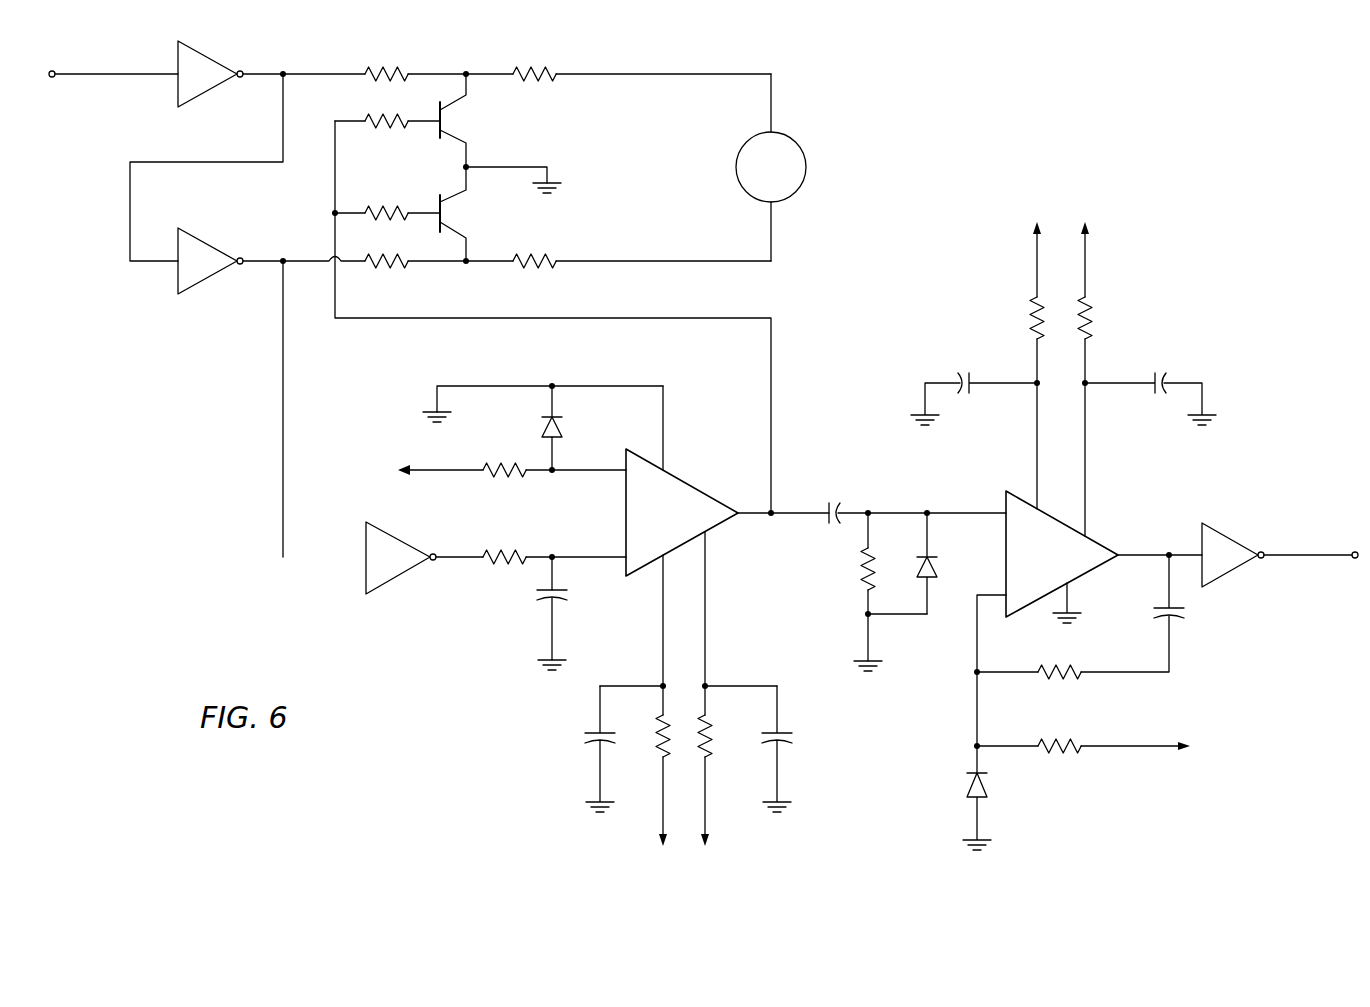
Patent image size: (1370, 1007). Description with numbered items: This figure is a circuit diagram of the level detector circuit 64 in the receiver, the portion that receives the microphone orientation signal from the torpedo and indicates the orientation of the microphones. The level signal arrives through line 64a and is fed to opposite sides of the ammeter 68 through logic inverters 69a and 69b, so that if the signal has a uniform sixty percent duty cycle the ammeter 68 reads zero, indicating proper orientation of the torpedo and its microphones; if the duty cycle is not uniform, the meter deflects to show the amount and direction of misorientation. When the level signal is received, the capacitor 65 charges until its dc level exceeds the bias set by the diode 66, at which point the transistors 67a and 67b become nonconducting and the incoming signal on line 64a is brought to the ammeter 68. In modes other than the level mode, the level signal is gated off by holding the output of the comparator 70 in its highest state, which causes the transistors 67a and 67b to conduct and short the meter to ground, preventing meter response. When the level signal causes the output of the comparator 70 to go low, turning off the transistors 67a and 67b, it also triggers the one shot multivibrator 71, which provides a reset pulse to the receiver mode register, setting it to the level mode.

The level detector circuit 64 is at (796, 379).
The line 64a is at (95, 76).
The capacitor 65 is at (541, 603).
The diode 66 is at (560, 428).
The transistor 67a is at (472, 122).
The transistor 67b is at (472, 221).
The ammeter 68 is at (797, 147).
The logic inverter 69a is at (207, 53).
The logic inverter 69b is at (207, 282).
The comparator 70 is at (698, 482).
The one shot multivibrator 71 is at (1117, 519).